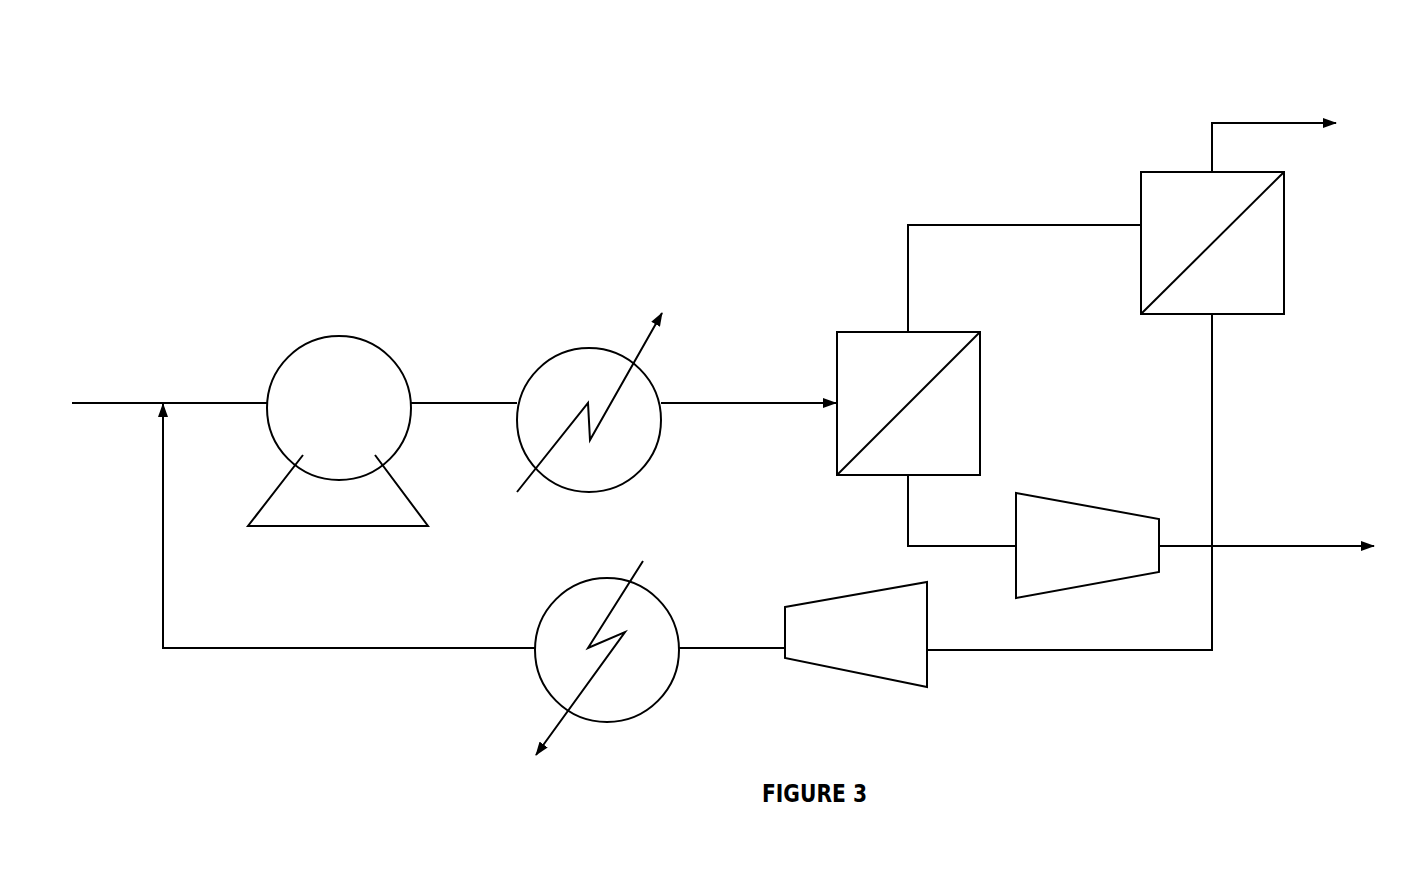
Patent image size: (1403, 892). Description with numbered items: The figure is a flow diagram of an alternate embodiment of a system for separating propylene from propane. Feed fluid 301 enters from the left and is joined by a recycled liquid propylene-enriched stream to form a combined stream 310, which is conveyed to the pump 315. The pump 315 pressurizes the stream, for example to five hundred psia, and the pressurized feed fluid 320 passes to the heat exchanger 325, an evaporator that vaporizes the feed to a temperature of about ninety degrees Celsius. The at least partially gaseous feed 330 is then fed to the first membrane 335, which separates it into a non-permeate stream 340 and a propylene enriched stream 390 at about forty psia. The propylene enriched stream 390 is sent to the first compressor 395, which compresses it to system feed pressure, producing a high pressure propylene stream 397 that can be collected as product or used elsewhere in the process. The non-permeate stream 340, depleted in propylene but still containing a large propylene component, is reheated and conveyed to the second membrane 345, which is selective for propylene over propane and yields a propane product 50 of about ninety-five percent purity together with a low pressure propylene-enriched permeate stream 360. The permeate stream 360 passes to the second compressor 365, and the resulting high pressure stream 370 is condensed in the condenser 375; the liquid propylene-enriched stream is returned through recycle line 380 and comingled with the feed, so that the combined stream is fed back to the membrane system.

The feed fluid 301 is at (109, 405).
The combined stream 310 is at (215, 405).
The pump 315 is at (339, 382).
The pressurized feed fluid 320 is at (447, 405).
The heat exchanger 325 is at (568, 350).
The at least partially gaseous feed 330 is at (715, 403).
The first membrane 335 is at (927, 352).
The non-permeate stream 340 is at (963, 223).
The second membrane 345 is at (1178, 207).
The propane product 50 is at (1247, 128).
The permeate stream 360 is at (1095, 482).
The second compressor 365 is at (890, 642).
The high pressure stream 370 is at (713, 648).
The condenser 375 is at (643, 648).
The recycle stream 380 is at (322, 647).
The propylene enriched stream 390 is at (962, 546).
The first compressor 395 is at (1098, 488).
The high pressure propylene stream 397 is at (1285, 546).